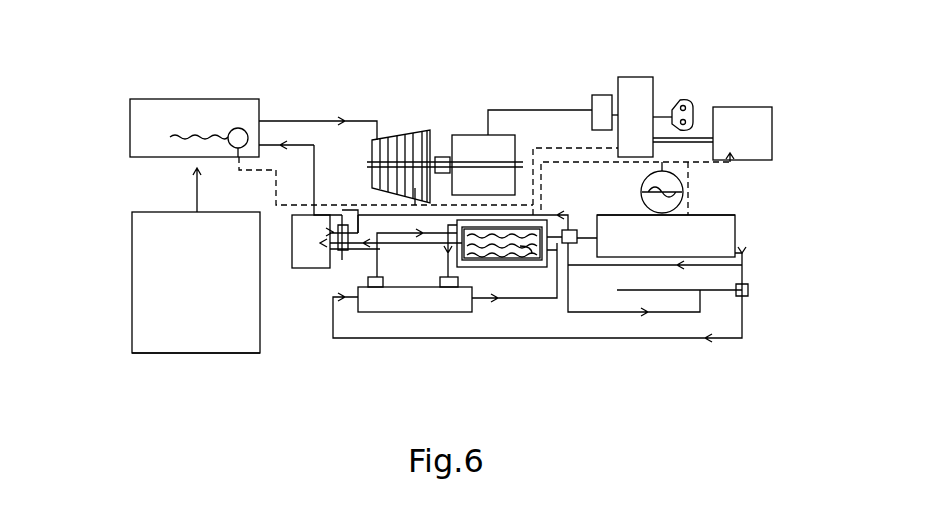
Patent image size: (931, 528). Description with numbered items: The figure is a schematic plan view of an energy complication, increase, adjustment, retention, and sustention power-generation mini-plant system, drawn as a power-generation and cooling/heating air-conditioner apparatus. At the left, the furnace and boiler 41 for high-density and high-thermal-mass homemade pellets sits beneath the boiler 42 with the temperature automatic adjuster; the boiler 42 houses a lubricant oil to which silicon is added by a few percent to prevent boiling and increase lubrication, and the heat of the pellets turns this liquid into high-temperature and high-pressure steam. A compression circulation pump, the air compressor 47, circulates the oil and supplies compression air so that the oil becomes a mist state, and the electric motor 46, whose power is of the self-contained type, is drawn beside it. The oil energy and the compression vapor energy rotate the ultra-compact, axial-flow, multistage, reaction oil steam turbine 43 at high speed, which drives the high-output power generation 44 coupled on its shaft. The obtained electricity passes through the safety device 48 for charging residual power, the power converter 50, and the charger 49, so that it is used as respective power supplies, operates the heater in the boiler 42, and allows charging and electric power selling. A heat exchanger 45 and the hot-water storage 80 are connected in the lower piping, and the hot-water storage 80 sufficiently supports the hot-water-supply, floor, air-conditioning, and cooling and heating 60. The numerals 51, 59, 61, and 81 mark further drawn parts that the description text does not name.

The furnace and boiler 41 is at (150, 243).
The boiler 42 is at (145, 130).
The oil steam turbine 43 is at (415, 132).
The high-output power generation 44 is at (482, 150).
The heat exchanger 45 is at (388, 298).
The electric motor 46 is at (317, 258).
The compression circulation pump (air compressor) 47 is at (343, 257).
The safety device 48 is at (600, 95).
The charger 49 is at (738, 115).
The power converter 50 is at (650, 105).
The fuel 51 is at (173, 342).
The line 59 is at (668, 213).
The hot-water-supply, floor, air-conditioning, and cooling and heating 60 is at (712, 232).
The valve 61 is at (573, 245).
The hot-water storage 80 is at (523, 255).
The valve 81 is at (633, 213).